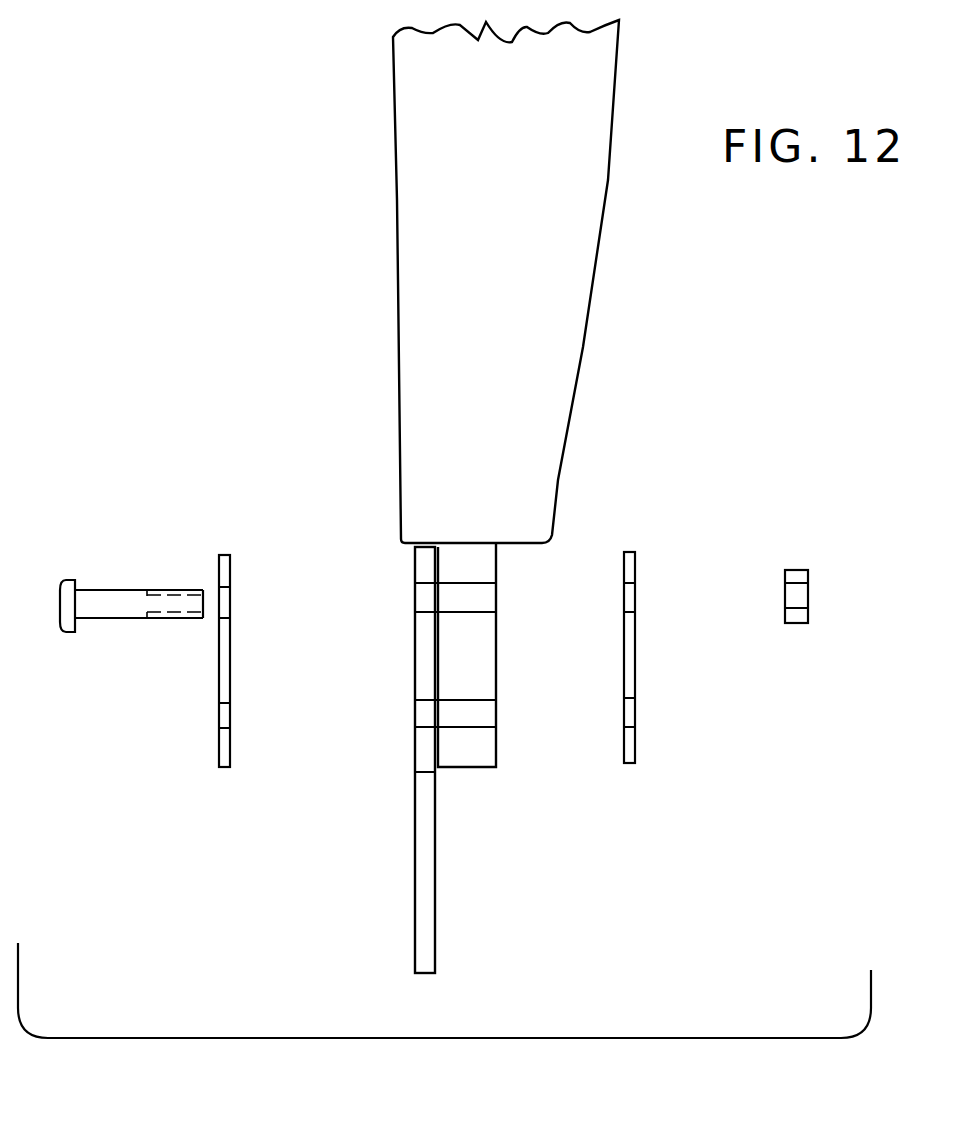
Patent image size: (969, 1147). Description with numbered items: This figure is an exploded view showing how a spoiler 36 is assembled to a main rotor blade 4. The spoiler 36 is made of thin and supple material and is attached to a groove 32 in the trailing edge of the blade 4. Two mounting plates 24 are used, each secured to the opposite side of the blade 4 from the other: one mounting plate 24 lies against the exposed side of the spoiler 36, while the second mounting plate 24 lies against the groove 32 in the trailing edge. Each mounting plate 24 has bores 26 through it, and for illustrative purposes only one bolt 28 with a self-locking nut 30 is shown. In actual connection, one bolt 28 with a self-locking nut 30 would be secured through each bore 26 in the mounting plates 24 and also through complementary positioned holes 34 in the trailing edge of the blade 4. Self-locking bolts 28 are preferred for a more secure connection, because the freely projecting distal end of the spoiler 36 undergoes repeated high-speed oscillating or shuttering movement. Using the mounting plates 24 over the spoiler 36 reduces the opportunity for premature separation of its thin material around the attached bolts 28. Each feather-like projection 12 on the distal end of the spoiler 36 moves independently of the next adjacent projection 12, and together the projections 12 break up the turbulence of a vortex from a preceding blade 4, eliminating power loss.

The main rotor blade 4 is at (425, 325).
The feather-like projection 12 is at (424, 771).
The mounting plate 24 is at (223, 748).
The bore 26 is at (205, 622).
The bolt 28 is at (107, 598).
The self-locking nut 30 is at (800, 598).
The groove 32 is at (398, 558).
The bore 34 is at (450, 600).
The spoiler 36 is at (430, 820).